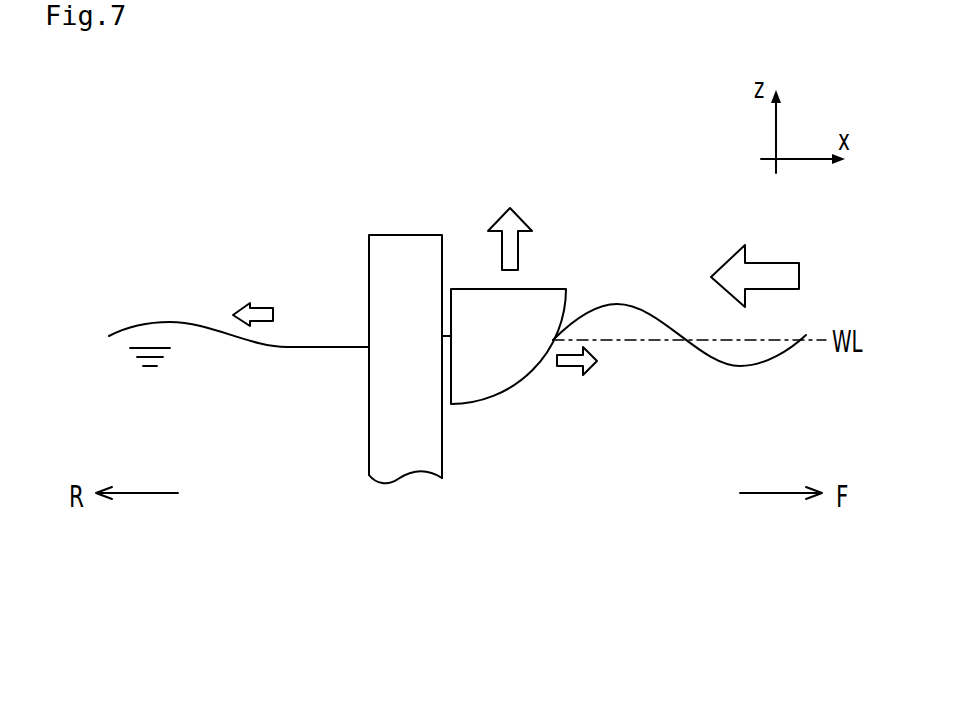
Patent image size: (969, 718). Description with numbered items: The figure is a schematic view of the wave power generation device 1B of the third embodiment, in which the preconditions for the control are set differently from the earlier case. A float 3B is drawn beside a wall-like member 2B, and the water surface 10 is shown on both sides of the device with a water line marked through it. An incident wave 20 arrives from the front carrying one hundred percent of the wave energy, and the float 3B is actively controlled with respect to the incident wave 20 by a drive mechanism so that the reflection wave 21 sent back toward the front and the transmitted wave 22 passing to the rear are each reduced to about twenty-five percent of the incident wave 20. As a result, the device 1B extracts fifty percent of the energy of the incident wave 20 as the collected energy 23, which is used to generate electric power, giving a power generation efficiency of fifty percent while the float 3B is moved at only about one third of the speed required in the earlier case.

The wave power generation device 1B is at (108, 104).
The water surface wave 10 is at (457, 327).
The vertical wall plate 2B is at (402, 323).
The float 3B is at (508, 376).
The incident wave 20 is at (763, 265).
The reflection wave 21 is at (580, 384).
The transmitted wave 22 is at (283, 290).
The collected energy 23 is at (543, 217).